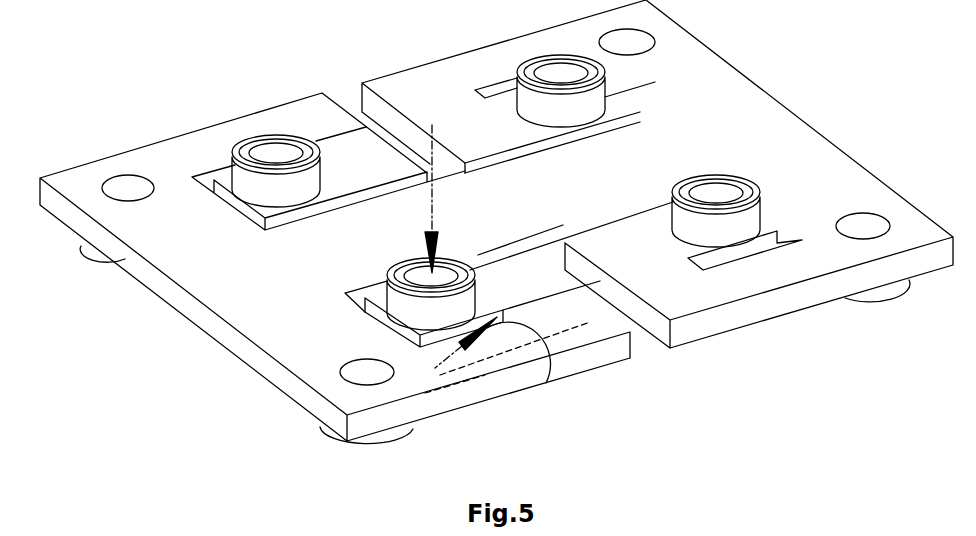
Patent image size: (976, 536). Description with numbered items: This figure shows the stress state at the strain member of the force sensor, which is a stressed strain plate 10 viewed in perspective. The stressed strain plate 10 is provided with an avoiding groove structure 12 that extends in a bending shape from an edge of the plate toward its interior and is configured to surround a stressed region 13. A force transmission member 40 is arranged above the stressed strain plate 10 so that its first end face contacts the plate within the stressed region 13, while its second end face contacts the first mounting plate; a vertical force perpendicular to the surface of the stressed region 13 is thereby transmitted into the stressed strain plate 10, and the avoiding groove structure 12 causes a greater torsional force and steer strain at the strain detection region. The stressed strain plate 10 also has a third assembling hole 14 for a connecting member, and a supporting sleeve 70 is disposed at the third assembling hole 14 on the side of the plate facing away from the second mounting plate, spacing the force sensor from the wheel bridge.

The stressed strain plate 10 is at (258, 265).
The avoiding groove structure 12 is at (623, 220).
The stressed region 13 is at (383, 307).
The third assembling hole 14 is at (865, 227).
The force transmission member 40 is at (410, 302).
The supporting sleeve 70 is at (385, 442).